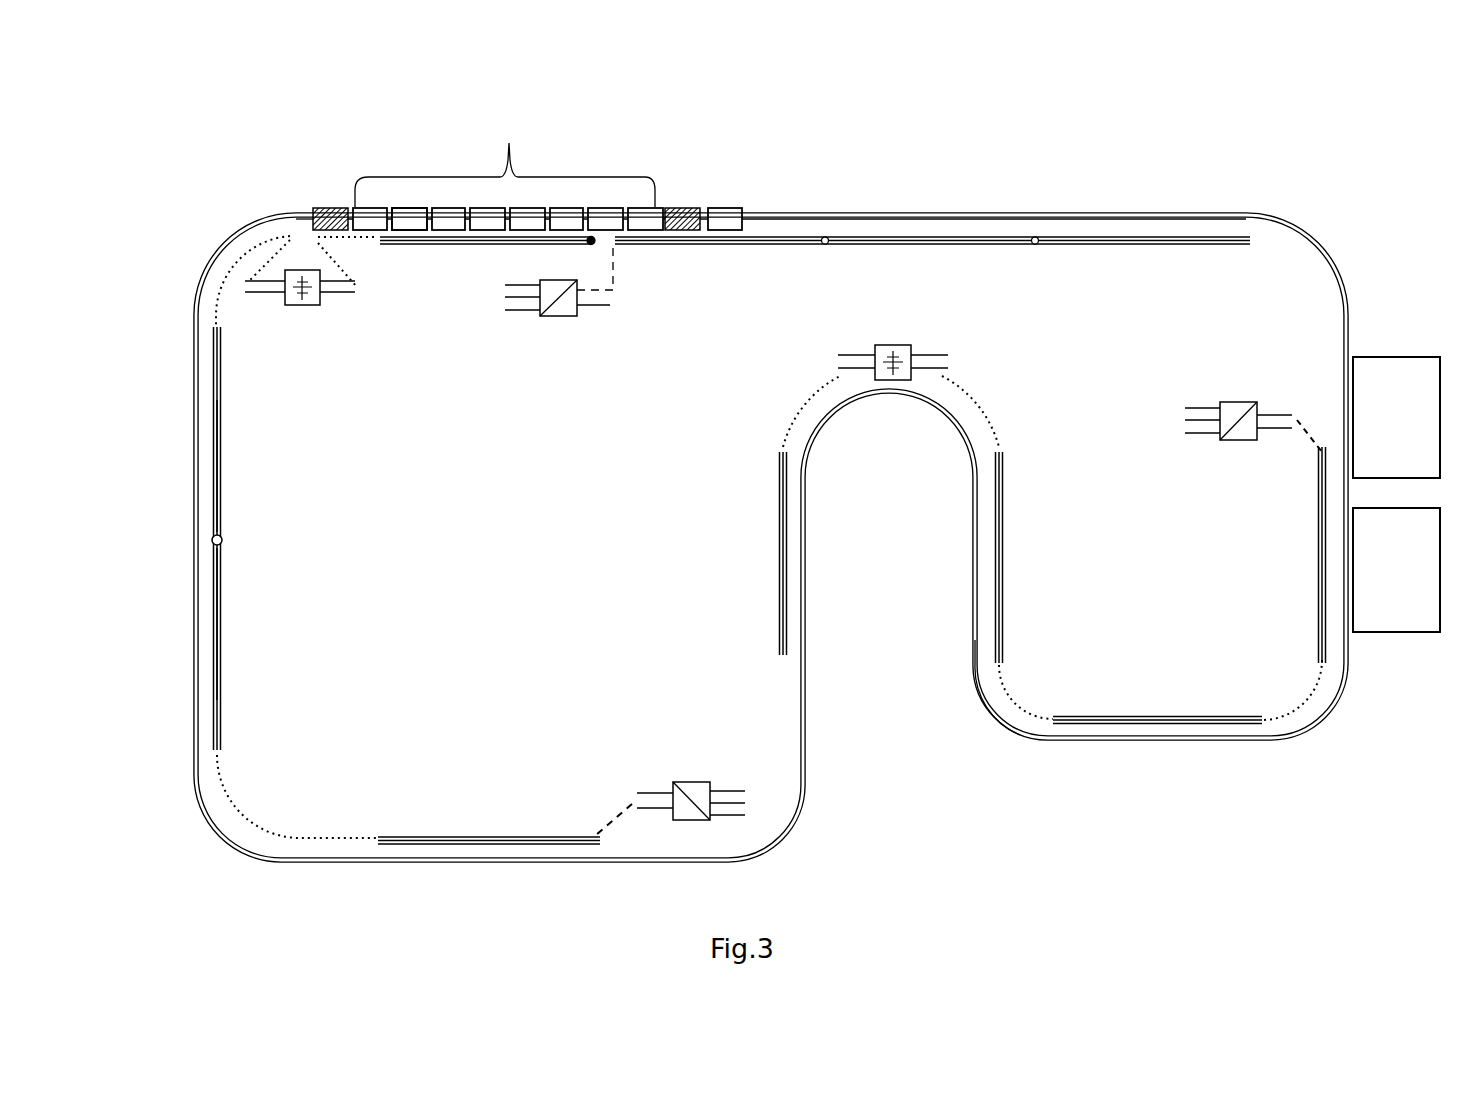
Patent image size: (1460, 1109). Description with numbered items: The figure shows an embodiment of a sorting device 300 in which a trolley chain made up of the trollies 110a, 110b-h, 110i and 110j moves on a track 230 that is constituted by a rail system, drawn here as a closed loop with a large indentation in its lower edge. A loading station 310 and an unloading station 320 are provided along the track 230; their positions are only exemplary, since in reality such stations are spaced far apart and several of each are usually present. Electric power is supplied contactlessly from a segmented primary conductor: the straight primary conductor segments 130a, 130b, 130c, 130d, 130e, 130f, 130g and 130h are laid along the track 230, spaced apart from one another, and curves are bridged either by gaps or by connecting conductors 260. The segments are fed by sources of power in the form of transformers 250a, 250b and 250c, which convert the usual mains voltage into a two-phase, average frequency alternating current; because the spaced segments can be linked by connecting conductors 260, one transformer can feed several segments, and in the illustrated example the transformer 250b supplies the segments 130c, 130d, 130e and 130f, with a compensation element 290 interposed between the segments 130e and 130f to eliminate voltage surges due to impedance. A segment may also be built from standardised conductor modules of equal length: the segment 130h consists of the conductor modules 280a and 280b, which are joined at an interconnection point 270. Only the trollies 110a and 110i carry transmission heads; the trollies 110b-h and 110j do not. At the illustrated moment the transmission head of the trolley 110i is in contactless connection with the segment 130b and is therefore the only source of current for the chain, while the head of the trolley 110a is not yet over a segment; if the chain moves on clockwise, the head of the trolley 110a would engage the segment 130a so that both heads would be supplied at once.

The sorting device 300 is at (1299, 197).
The loading station 310 is at (1381, 612).
The unloading station 320 is at (1398, 400).
The trolley 110a is at (330, 205).
The trollies 110b-h is at (514, 140).
The trolley 110i is at (686, 205).
The trolley 110j is at (745, 205).
The primary conductor segment 130a is at (410, 227).
The primary conductor segment 130b is at (1162, 232).
The primary conductor segment 130c is at (1316, 577).
The primary conductor segment 130d is at (1147, 728).
The primary conductor segment 130e is at (1010, 520).
The primary conductor segment 130f is at (777, 606).
The primary conductor segment 130g is at (438, 832).
The primary conductor segment 130h is at (224, 590).
The track 230 is at (990, 706).
The transformer 250a is at (573, 320).
The transformer 250b is at (1218, 397).
The transformer 250c is at (688, 777).
The connecting conductor 260 is at (980, 390).
The interconnection point 270 is at (212, 536).
The conductor module 280a is at (211, 467).
The conductor module 280b is at (212, 607).
The compensation element 290 is at (836, 355).